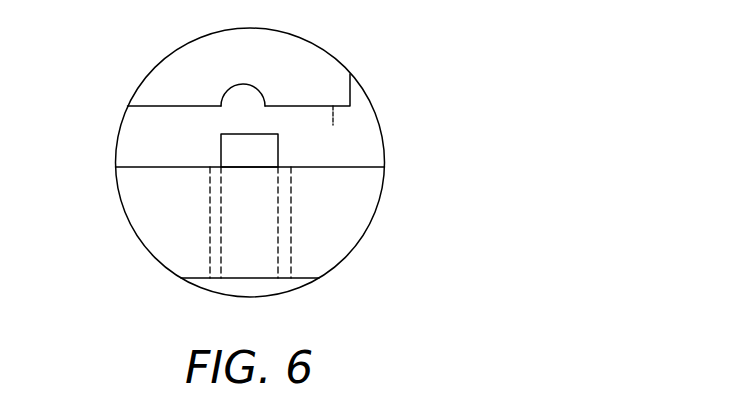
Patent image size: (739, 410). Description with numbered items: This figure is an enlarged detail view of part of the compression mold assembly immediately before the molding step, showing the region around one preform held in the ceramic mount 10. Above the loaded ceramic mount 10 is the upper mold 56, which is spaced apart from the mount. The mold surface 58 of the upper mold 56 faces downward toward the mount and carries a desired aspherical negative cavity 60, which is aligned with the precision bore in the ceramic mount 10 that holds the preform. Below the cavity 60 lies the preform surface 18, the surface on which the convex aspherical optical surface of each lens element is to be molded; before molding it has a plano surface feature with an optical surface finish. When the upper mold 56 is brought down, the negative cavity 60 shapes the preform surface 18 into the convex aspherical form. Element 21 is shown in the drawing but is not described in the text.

The ceramic mount 10 is at (358, 217).
The preform surface 18 is at (243, 150).
The base plate 21 is at (250, 278).
The upper mold 56 is at (305, 58).
The mold surface 58 is at (333, 125).
The aspherical negative cavity 60 is at (242, 85).